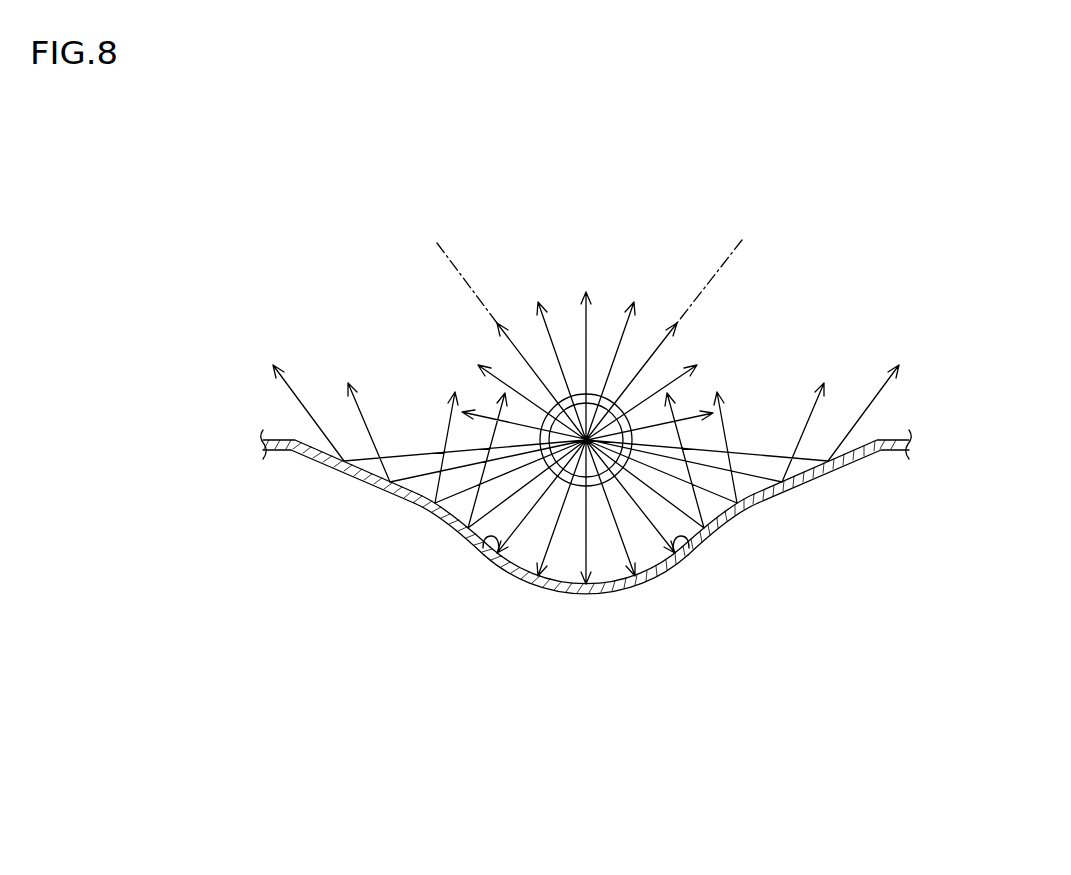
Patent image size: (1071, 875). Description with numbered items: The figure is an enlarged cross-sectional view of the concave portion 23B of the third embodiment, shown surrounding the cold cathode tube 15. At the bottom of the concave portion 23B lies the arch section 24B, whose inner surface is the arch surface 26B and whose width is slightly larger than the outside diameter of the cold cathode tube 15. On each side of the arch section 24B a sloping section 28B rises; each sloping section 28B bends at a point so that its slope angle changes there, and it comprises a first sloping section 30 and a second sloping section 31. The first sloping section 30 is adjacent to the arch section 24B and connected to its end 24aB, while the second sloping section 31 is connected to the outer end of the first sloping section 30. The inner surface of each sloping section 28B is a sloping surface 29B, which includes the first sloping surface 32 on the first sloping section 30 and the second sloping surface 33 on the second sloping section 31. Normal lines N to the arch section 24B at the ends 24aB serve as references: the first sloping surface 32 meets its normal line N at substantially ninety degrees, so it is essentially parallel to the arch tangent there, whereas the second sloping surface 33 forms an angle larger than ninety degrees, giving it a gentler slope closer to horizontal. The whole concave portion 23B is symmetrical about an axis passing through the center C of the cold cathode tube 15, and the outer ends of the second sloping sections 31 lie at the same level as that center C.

The concave portion 23B is at (743, 723).
The arch section 24B is at (490, 567).
The ends of arch section 24aB is at (483, 546).
The sloping section 28B is at (858, 539).
The first sloping section 30 is at (764, 509).
The second sloping section 31 is at (877, 461).
The sloping surface 29B is at (313, 237).
The first sloping surface 32 is at (453, 518).
The second sloping surface 33 is at (372, 476).
The arch surface 26B is at (720, 516).
The cold cathode tube 15 is at (611, 580).
The center of cold cathode tube C is at (564, 400).
The normal line N is at (446, 256).